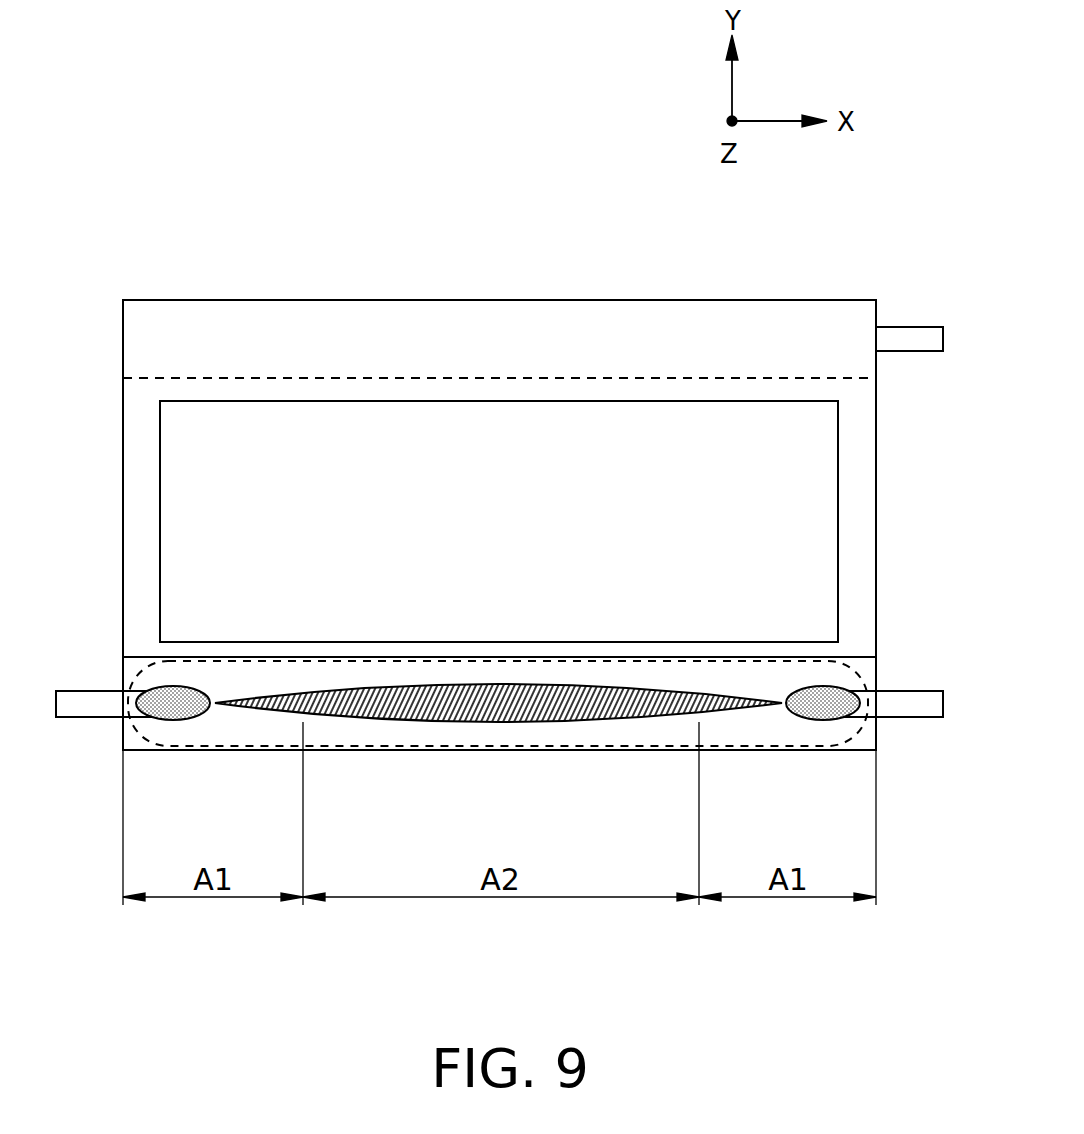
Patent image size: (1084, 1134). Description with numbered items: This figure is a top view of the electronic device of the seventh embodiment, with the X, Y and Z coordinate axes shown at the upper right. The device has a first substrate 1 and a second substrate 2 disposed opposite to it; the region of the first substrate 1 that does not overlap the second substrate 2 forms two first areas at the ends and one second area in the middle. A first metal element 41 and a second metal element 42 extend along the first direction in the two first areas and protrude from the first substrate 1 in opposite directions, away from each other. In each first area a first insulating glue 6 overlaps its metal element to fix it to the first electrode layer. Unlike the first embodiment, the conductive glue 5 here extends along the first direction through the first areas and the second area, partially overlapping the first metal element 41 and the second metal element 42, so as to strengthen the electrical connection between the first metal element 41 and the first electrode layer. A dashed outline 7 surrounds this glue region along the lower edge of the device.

The first substrate 1 is at (128, 671).
The second substrate 2 is at (135, 466).
The conductive glue 5 is at (597, 722).
The first insulating glue 6 is at (173, 712).
The accommodating groove 7 is at (512, 747).
The first metal element 41 is at (905, 708).
The second metal element 42 is at (78, 708).